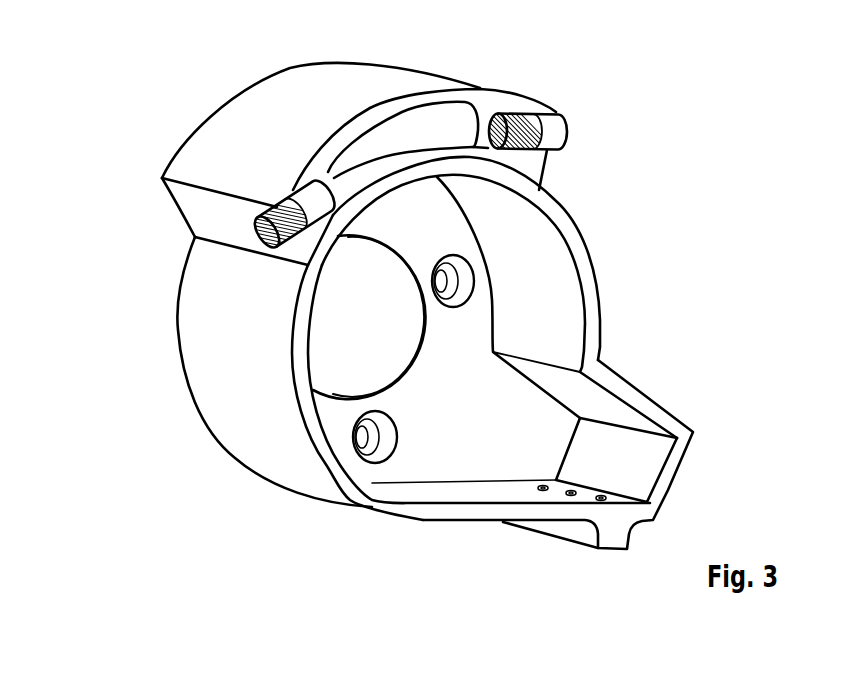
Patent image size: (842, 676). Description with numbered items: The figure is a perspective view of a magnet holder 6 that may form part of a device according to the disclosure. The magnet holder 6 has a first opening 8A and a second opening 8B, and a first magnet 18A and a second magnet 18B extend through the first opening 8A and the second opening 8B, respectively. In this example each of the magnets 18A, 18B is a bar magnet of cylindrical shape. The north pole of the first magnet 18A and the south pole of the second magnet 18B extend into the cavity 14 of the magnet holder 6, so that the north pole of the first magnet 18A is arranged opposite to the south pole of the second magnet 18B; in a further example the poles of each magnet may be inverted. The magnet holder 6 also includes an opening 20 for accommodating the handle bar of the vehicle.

The magnet holder 6 is at (261, 107).
The cavity 14 is at (407, 128).
The first opening 8A is at (290, 189).
The second opening 8B is at (515, 110).
The first magnet 18A is at (258, 231).
The second magnet 18B is at (560, 147).
The opening 20 is at (366, 331).